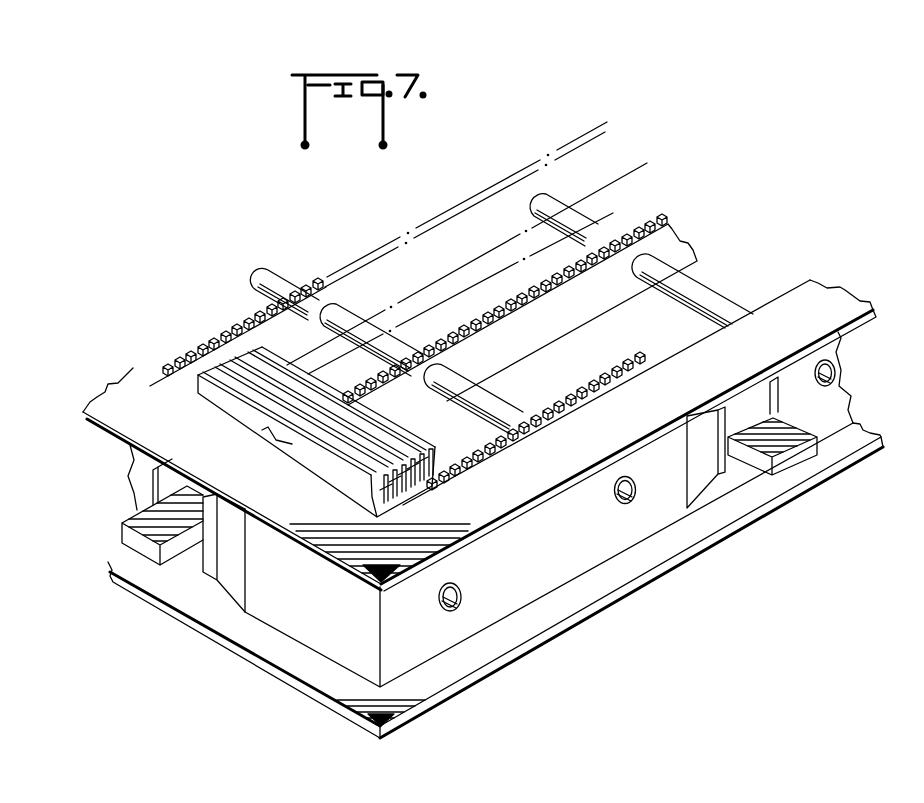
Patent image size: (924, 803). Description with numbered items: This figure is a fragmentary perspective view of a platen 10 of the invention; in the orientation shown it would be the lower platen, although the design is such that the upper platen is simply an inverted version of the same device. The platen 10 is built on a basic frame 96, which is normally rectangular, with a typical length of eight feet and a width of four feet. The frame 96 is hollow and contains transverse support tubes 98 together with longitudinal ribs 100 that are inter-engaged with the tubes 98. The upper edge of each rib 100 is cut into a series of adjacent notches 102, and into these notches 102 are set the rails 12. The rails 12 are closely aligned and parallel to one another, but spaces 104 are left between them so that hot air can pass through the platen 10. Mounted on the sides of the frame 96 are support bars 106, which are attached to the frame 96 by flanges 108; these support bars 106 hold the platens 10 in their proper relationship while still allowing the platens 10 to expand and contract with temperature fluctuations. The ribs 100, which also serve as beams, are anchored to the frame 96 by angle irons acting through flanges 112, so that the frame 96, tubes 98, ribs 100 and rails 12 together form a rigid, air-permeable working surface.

The platen 10 is at (736, 206).
The rails 12 is at (388, 447).
The frame 96 is at (838, 404).
The transverse support tubes 98 is at (697, 290).
The longitudinal ribs 100 is at (472, 253).
The notches 102 is at (236, 302).
The spaces 104 is at (297, 393).
The support bars 106 is at (802, 455).
The flanges 108 is at (233, 568).
The flanges 112 is at (501, 496).